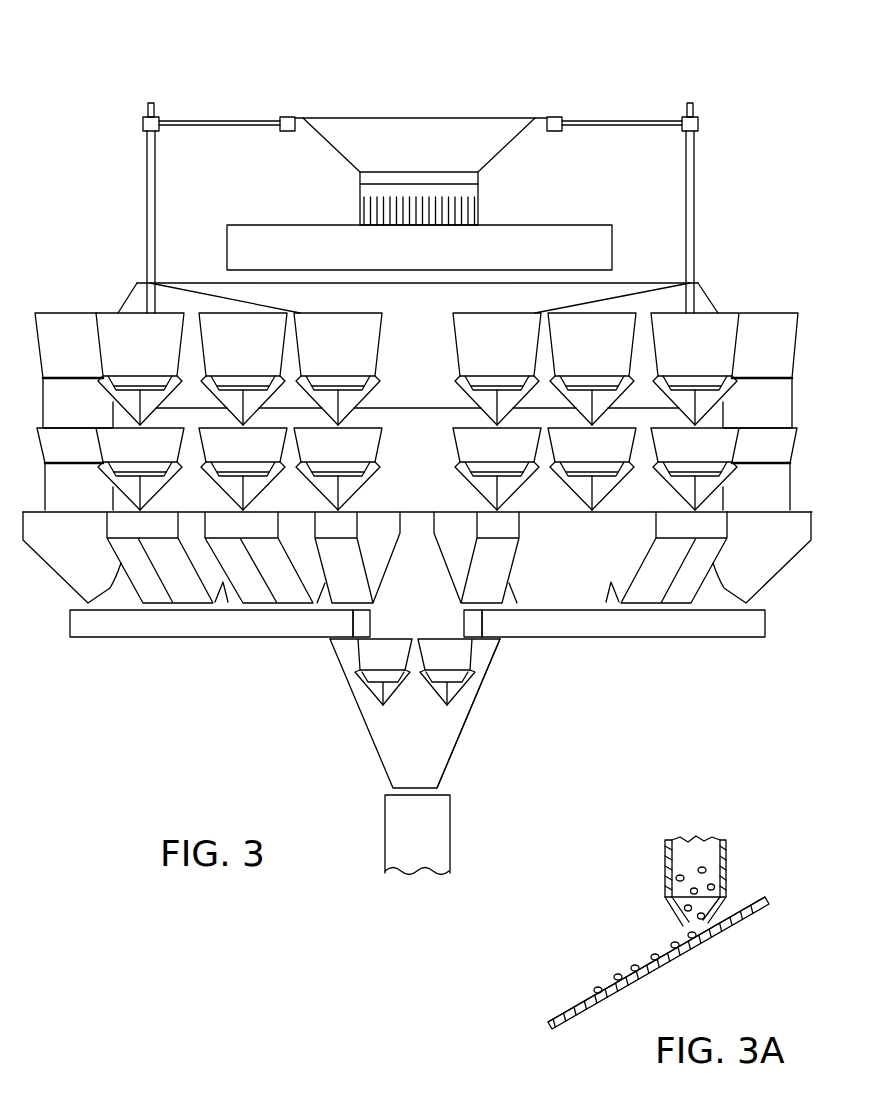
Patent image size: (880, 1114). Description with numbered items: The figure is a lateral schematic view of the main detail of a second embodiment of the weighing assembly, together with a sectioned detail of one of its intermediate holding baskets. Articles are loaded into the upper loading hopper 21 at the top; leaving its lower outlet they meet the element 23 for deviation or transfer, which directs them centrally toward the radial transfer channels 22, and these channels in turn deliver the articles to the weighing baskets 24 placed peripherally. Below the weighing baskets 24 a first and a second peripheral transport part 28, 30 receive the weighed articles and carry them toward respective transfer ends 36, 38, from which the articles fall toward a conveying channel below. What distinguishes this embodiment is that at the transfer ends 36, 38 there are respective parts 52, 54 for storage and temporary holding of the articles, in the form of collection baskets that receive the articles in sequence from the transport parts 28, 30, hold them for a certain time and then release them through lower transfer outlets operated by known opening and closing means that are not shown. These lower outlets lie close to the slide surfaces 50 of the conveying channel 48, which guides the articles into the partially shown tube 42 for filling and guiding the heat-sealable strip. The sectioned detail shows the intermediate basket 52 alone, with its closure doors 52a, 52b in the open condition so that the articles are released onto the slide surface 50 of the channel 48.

In FIG. 3, the upper loading hopper 21 is at (393, 133).
In FIG. 3, the radial transfer channels 22 is at (134, 302).
In FIG. 3, the element for deviation or transfer 23 is at (552, 245).
In FIG. 3, the weighing baskets 24 is at (770, 338).
In FIG. 3, the first peripheral transport part 28 is at (723, 646).
In FIG. 3, the second peripheral transport part 30 is at (143, 646).
In FIG. 3, the transfer end 36 is at (449, 624).
In FIG. 3, the transfer end 38 is at (381, 624).
In FIG. 3, the tube for filling and guiding 42 is at (427, 826).
In FIG. 3, the conveying channel 48 is at (372, 752).
In FIG. 3A, the conveying channel 48 is at (612, 1008).
In FIG. 3, the slide surfaces 50 is at (448, 722).
In FIG. 3A, the slide surfaces 50 is at (572, 1013).
In FIG. 3, the intermediate collection basket 52 is at (482, 668).
In FIG. 3A, the intermediate collection basket 52 is at (658, 870).
In FIG. 3A, the closure door 52a is at (673, 916).
In FIG. 3A, the closure door 52b is at (730, 903).
In FIG. 3, the intermediate collection basket 54 is at (380, 708).